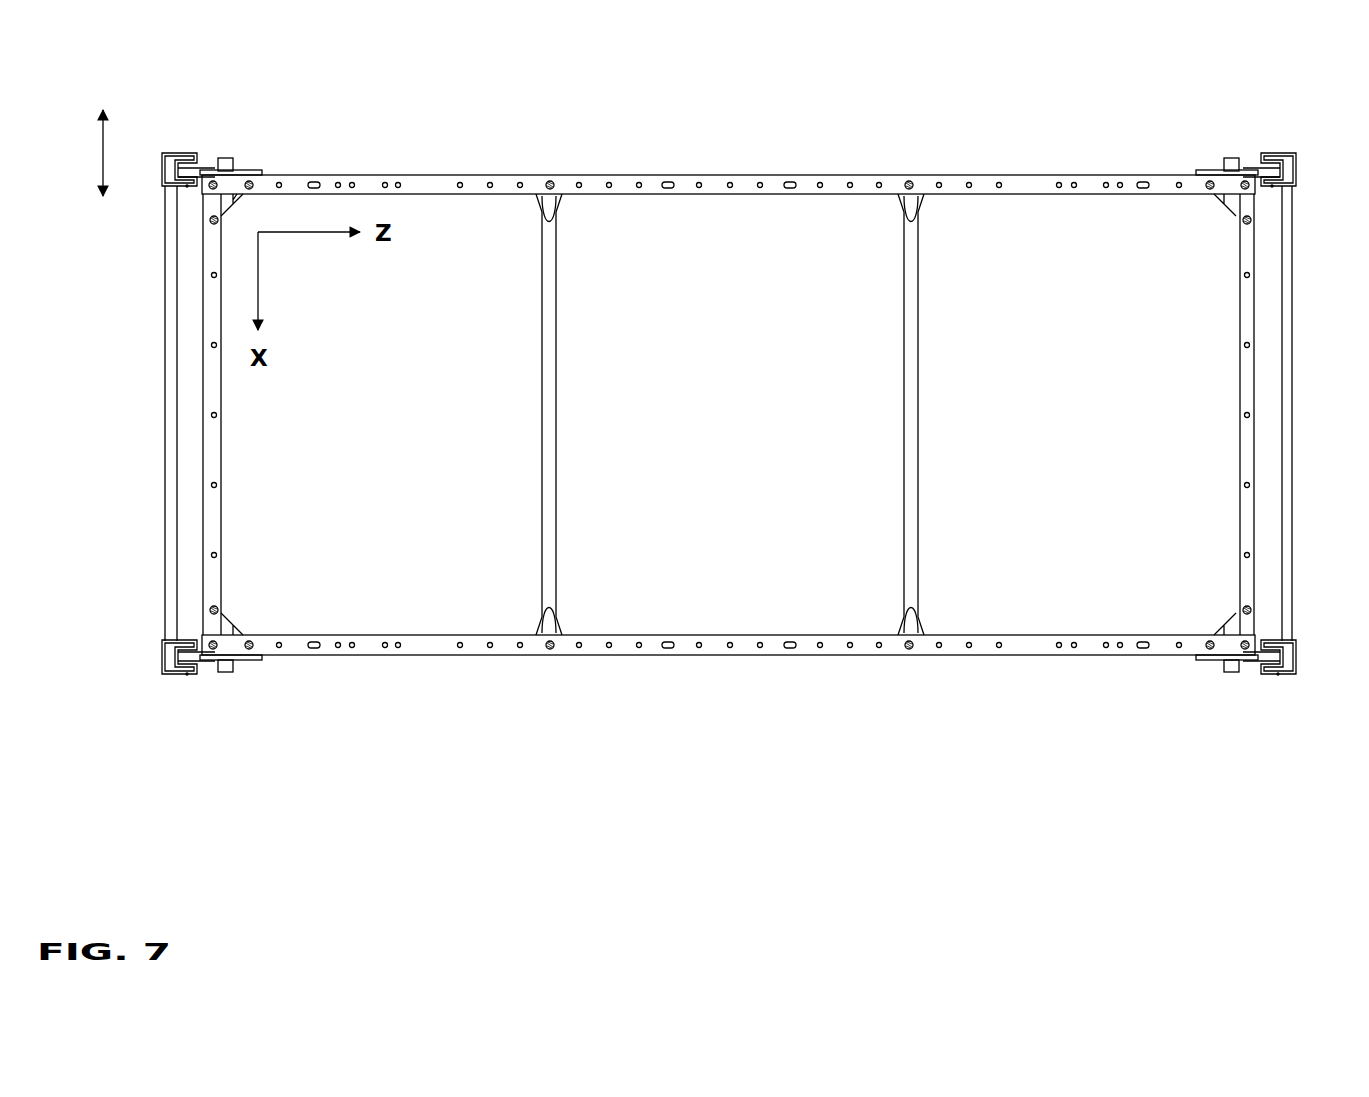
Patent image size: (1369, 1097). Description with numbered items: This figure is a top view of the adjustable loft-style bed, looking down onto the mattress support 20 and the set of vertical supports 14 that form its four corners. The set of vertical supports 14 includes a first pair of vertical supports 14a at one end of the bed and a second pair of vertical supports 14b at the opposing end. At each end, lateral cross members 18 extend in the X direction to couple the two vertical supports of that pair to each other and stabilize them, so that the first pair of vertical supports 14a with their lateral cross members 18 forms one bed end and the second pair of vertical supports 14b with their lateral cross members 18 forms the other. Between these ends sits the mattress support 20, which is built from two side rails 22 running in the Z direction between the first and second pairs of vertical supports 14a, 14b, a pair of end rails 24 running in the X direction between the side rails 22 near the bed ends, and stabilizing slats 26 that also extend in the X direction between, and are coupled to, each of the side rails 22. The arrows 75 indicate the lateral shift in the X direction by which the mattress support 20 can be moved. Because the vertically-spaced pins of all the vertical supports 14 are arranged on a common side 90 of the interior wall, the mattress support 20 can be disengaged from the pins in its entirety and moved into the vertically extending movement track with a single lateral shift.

The vertical supports 14 is at (734, 357).
The first pair of vertical supports 14a is at (165, 160).
The second pair of vertical supports 14b is at (1282, 394).
The lateral cross members 18 is at (172, 540).
The mattress support 20 is at (675, 412).
The side rails 22 is at (832, 187).
The end rails 24 is at (215, 400).
The stabilizing slats 26 is at (553, 428).
The arrows 75 is at (103, 152).
The common side 90 is at (186, 198).